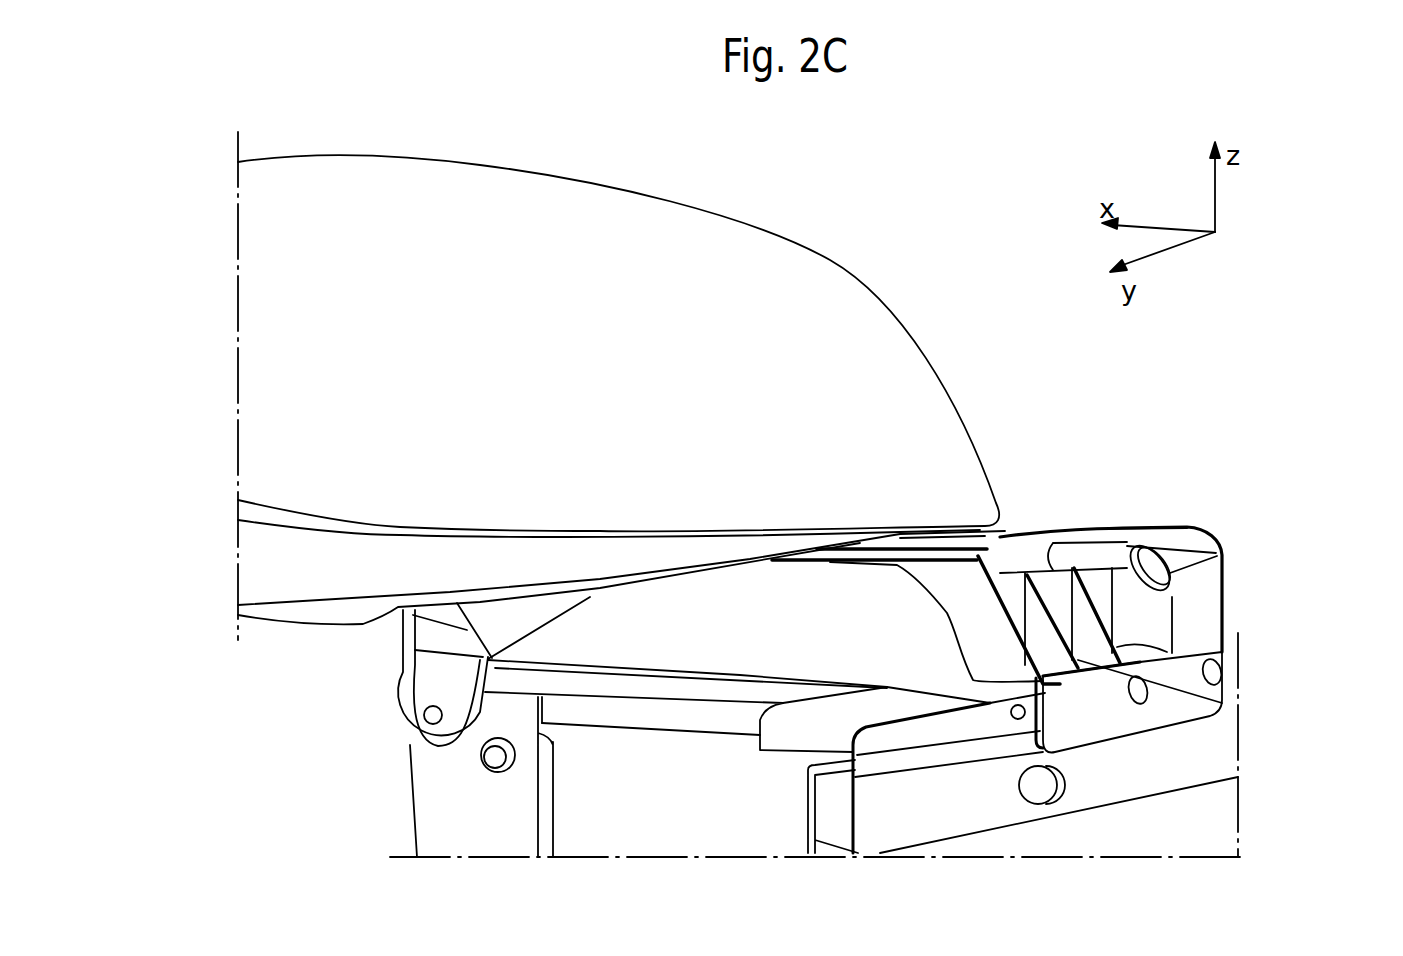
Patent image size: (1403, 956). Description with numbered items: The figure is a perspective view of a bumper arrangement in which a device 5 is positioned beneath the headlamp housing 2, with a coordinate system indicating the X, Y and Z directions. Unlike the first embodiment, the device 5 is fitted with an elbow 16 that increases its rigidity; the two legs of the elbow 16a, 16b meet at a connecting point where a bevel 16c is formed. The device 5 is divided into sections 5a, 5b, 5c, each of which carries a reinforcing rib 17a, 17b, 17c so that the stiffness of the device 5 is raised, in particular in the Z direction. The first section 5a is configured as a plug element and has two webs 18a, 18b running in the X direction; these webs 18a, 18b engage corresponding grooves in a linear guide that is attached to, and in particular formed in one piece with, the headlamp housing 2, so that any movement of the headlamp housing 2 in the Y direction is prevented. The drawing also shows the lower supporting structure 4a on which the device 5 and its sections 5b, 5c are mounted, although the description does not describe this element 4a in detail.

The headlamp housing 2 is at (838, 292).
The front-end carrier bracket 4a is at (601, 830).
The device 5 is at (1267, 552).
The first section 5a is at (969, 522).
The section 5b is at (1010, 603).
The section 5c is at (1222, 703).
The elbow 16 is at (1212, 535).
The leg of the elbow 16a is at (1136, 525).
The leg of the elbow 16b is at (1207, 587).
The bevel 16c is at (1190, 543).
The reinforcing rib 17a is at (983, 647).
The reinforcing rib 17b is at (1052, 600).
The reinforcing rib 17c is at (1090, 587).
The web 18a is at (912, 567).
The web 18b is at (1005, 531).